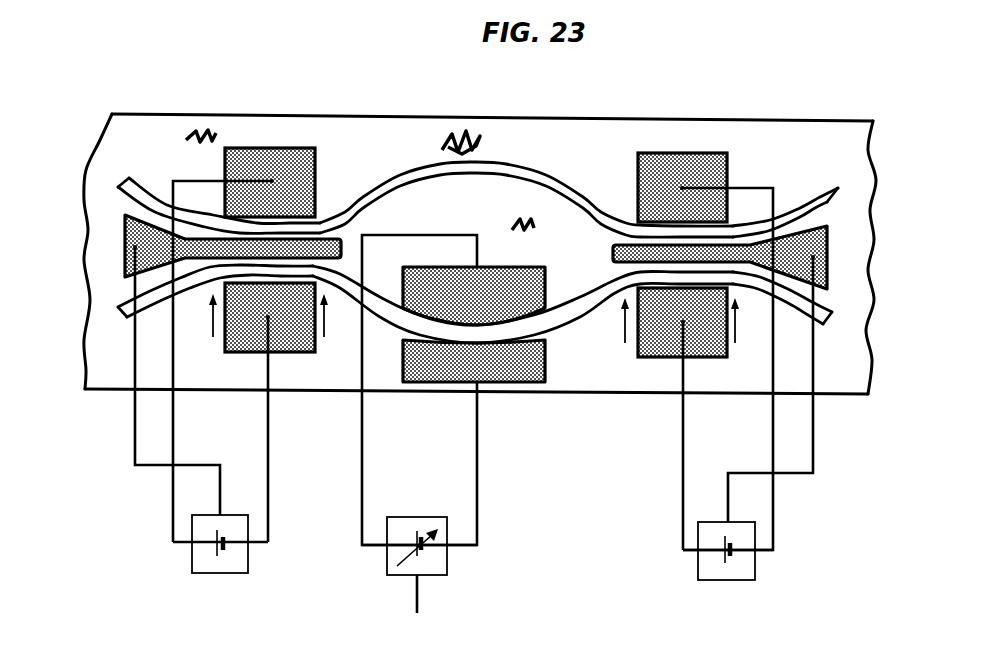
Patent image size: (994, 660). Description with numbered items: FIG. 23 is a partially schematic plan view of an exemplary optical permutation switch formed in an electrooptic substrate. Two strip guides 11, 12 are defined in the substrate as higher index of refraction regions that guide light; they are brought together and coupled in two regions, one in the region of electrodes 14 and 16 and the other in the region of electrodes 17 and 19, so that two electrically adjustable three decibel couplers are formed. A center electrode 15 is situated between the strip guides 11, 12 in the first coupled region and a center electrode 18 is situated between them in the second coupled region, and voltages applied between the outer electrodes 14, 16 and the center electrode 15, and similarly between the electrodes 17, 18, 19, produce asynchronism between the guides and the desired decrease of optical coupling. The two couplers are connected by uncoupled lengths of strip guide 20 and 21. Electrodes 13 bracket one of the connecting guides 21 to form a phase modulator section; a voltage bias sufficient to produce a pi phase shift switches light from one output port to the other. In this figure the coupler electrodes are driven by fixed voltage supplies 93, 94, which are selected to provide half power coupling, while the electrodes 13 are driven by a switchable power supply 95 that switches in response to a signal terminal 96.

The strip guide 11 is at (138, 189).
The strip guide 12 is at (155, 290).
The electrodes 13 is at (528, 268).
The electrode 14 is at (230, 351).
The center electrode 15 is at (124, 227).
The electrode 16 is at (315, 165).
The electrode 17 is at (725, 353).
The center electrode 18 is at (828, 233).
The electrode 19 is at (725, 166).
The connecting strip guide 20 is at (557, 187).
The connecting strip guide 21 is at (587, 305).
The fixed voltage supply 93 is at (238, 572).
The fixed voltage supply 94 is at (738, 580).
The switchable power supply 95 is at (448, 565).
The signal terminal 96 is at (419, 610).